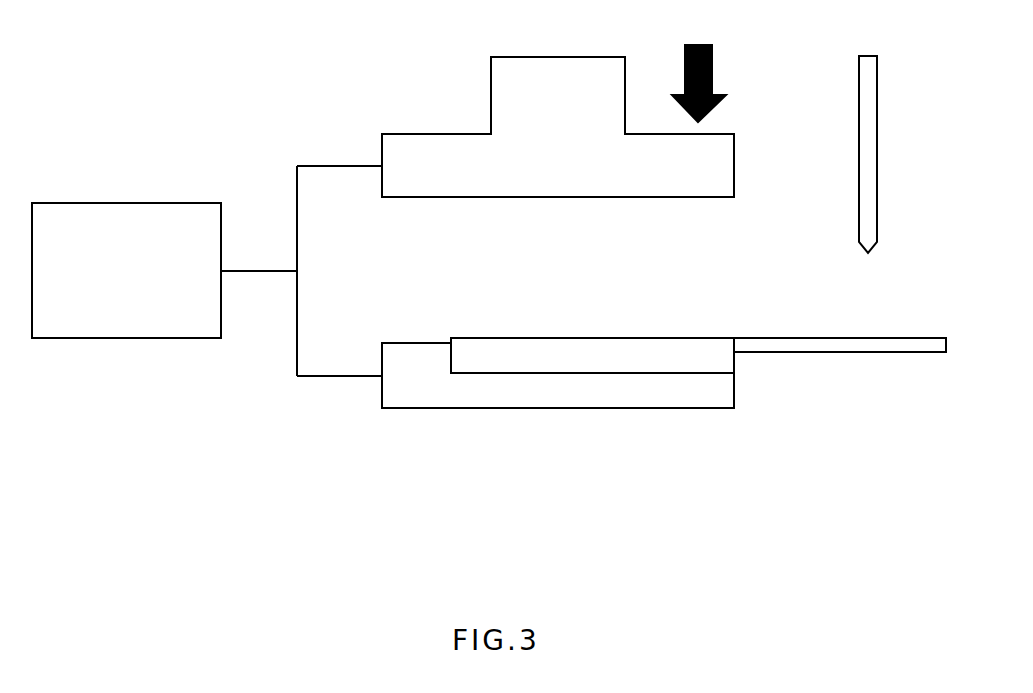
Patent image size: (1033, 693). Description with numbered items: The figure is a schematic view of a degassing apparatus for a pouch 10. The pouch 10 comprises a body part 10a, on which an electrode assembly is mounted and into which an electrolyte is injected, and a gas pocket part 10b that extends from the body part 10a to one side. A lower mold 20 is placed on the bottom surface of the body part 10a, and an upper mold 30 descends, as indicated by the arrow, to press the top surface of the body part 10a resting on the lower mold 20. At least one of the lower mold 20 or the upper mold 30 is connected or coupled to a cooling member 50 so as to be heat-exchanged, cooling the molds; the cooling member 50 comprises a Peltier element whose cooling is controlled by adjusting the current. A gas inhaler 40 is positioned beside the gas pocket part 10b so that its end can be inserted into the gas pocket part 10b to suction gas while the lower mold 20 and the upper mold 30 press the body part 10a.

The pouch 10 is at (764, 305).
The body part 10a is at (578, 357).
The gas pocket part 10b is at (906, 345).
The lower mold 20 is at (501, 392).
The upper mold 30 is at (433, 147).
The gas inhaler 40 is at (870, 146).
The cooling member 50 is at (122, 215).